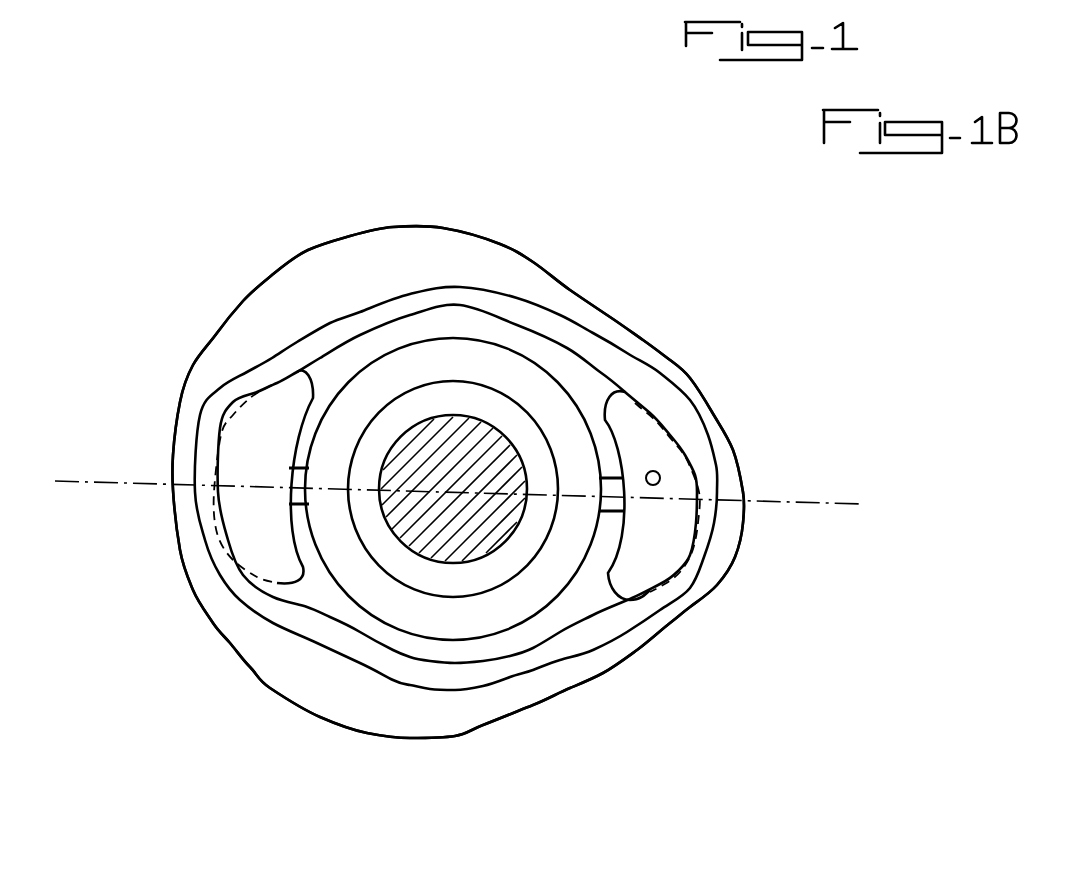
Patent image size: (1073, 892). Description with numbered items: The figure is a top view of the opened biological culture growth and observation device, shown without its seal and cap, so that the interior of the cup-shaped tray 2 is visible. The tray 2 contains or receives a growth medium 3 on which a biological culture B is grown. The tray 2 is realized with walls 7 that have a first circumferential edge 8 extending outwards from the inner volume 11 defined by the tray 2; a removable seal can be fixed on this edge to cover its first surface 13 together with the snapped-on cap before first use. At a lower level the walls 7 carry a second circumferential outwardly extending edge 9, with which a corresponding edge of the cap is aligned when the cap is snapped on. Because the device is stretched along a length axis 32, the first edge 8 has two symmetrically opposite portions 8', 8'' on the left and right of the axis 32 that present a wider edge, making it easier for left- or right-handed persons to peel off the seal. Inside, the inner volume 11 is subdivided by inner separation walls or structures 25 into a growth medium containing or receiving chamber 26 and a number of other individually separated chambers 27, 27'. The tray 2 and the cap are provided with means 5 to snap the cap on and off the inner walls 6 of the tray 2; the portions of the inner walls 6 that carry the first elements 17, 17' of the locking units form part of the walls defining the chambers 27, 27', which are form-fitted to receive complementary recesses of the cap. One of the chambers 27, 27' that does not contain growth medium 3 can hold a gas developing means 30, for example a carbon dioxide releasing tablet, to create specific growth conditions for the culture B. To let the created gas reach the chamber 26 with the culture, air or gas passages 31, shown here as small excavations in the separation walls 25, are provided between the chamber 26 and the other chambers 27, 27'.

The cup-shaped tray 2 is at (293, 322).
The growth medium 3 is at (453, 489).
The means to snap on/off the cap 5 is at (222, 535).
The inner walls 6 is at (222, 462).
The walls 7 is at (370, 367).
The first circumferential edge 8 is at (456, 470).
The portion of the first circumferential edge 8' is at (350, 695).
The portion of the first circumferential edge 8'' is at (310, 305).
The second circumferential outwardly extending edge 9 is at (460, 298).
The inner volume 11 is at (650, 560).
The first surface 13 is at (458, 482).
The first element of a locking unit 17 is at (140, 446).
The first element of a locking unit 17' is at (779, 451).
The inner separation walls or structures 25 is at (507, 337).
The growth medium containing or receiving chamber 26 is at (453, 489).
The individually separated chamber 27 is at (274, 502).
The individually separated chamber 27' is at (639, 517).
The gas developing means 30 is at (660, 478).
The air or gas passages 31 is at (603, 483).
The length axis 32 is at (477, 506).
The biological culture B is at (453, 489).